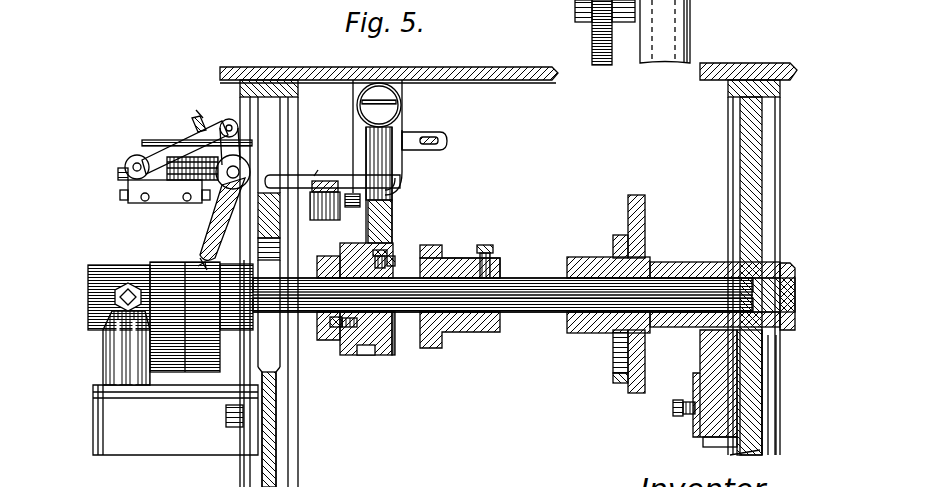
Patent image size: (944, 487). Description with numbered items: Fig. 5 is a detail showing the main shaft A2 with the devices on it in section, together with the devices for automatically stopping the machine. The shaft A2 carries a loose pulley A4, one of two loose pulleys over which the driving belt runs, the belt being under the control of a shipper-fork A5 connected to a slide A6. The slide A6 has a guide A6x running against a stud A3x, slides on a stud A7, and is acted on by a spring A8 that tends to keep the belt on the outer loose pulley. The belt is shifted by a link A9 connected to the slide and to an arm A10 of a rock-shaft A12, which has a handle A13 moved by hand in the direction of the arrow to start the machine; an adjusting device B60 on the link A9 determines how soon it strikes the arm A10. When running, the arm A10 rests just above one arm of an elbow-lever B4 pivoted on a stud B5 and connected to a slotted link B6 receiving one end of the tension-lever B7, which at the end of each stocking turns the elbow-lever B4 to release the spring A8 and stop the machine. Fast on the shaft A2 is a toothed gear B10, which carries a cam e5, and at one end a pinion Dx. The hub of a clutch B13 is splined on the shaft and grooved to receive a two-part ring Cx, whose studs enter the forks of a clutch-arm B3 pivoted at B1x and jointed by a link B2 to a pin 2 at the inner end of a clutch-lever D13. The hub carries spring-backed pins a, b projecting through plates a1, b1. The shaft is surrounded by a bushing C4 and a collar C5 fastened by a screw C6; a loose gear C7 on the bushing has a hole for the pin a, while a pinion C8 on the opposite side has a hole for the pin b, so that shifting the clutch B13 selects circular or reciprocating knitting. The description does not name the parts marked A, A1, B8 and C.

The top plate A is at (528, 67).
The frame standard A1 is at (782, 185).
The main shaft A2 is at (545, 278).
The stud A3x is at (148, 143).
The loose pulley A4 is at (173, 372).
The shipper-fork A5 is at (208, 372).
The slide A6 is at (140, 204).
The guide A6x is at (150, 155).
The stud A7 is at (185, 160).
The spring A8 is at (222, 160).
The link A9 is at (147, 158).
The arm A10 is at (248, 95).
The rock-shaft A12 is at (240, 168).
The handle A13 is at (175, 264).
The pivot B1x is at (400, 110).
The link B2 is at (318, 207).
The clutch-arm B3 is at (385, 238).
The elbow-lever B4 is at (290, 175).
The stud B5 is at (402, 190).
The slotted link B6 is at (416, 136).
The tension-lever B7 is at (446, 134).
The block B8 is at (333, 181).
The toothed gear B10 is at (636, 195).
The clutch B13 is at (390, 346).
The adjusting device B60 is at (198, 112).
The gear C is at (677, 0).
The bushing C4 is at (502, 322).
The collar C5 is at (505, 258).
The screw C6 is at (485, 246).
The loose gear C7 is at (451, 260).
The pinion C8 is at (337, 340).
The two-part ring Cx is at (366, 350).
The clutch-lever D13 is at (322, 221).
The pinion Dx is at (798, 265).
The pin a is at (397, 253).
The plate or washer a1 is at (400, 259).
The pin b is at (328, 322).
The plate or washer b1 is at (318, 345).
The cam e5 is at (614, 366).
The pin 2 is at (320, 168).